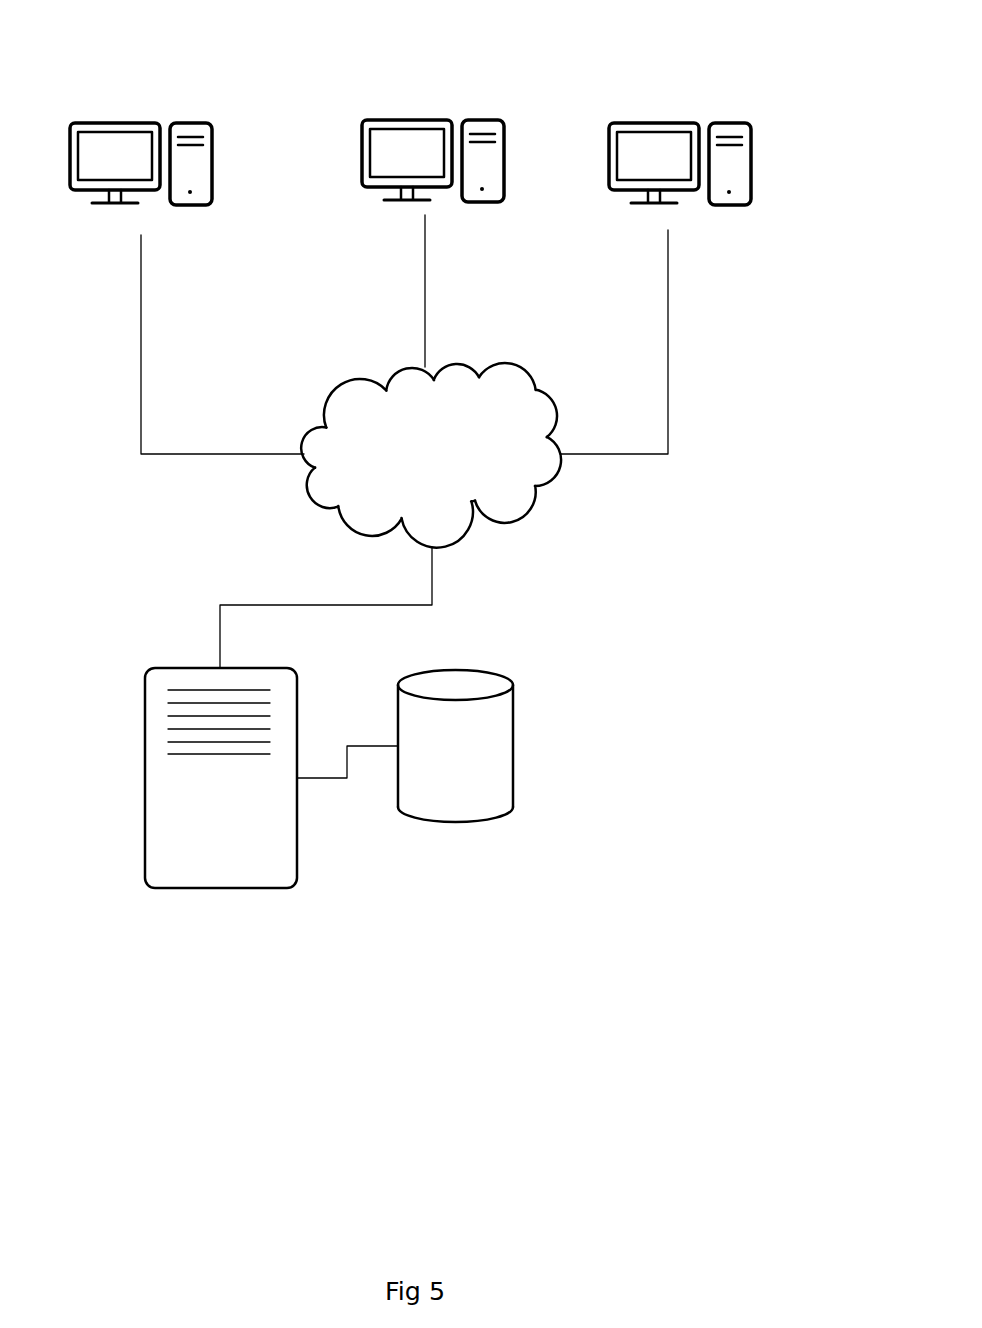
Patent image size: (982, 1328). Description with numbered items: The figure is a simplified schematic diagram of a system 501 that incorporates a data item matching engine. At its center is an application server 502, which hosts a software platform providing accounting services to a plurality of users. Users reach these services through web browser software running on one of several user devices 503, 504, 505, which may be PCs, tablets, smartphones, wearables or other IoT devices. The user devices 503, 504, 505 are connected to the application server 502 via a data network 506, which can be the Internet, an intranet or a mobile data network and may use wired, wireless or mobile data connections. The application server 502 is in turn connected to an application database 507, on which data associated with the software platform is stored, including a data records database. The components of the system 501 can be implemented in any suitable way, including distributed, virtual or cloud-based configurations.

The system 501 is at (822, 32).
The application server 502 is at (145, 730).
The user device 503 is at (113, 123).
The user device 504 is at (405, 120).
The user device 505 is at (652, 123).
The data network 506 is at (514, 365).
The application database 507 is at (487, 670).